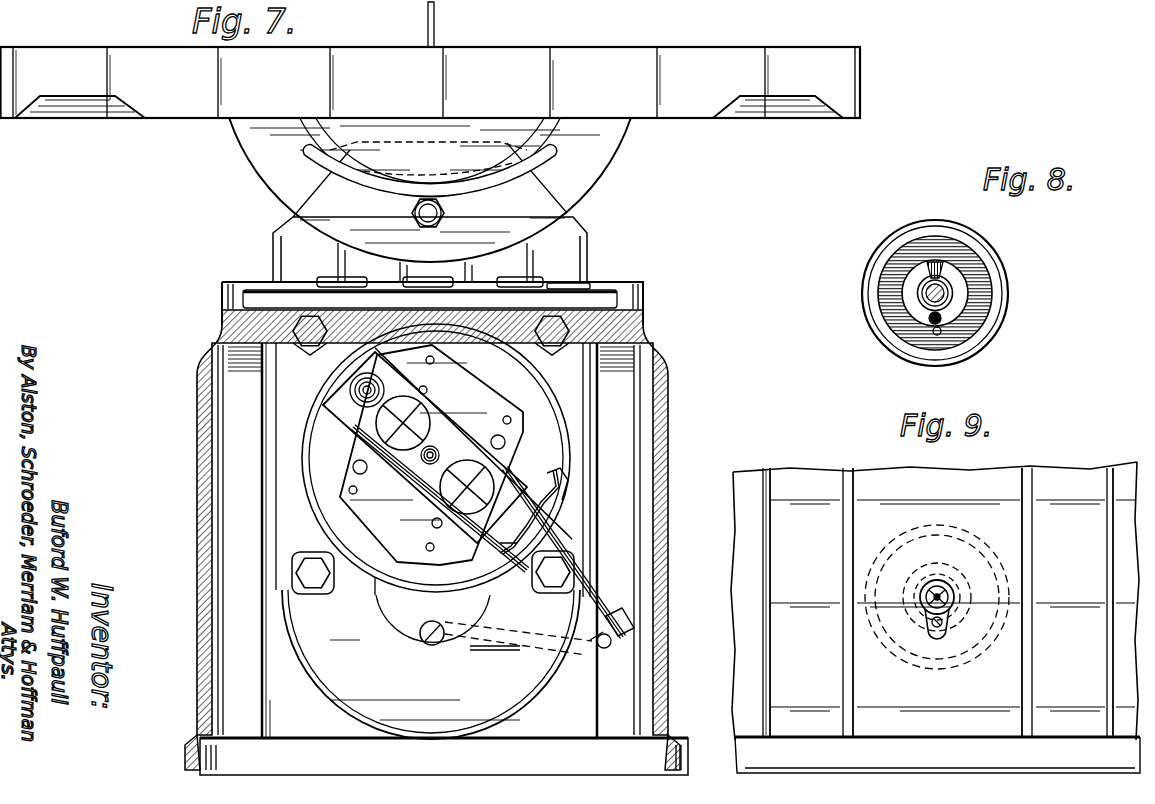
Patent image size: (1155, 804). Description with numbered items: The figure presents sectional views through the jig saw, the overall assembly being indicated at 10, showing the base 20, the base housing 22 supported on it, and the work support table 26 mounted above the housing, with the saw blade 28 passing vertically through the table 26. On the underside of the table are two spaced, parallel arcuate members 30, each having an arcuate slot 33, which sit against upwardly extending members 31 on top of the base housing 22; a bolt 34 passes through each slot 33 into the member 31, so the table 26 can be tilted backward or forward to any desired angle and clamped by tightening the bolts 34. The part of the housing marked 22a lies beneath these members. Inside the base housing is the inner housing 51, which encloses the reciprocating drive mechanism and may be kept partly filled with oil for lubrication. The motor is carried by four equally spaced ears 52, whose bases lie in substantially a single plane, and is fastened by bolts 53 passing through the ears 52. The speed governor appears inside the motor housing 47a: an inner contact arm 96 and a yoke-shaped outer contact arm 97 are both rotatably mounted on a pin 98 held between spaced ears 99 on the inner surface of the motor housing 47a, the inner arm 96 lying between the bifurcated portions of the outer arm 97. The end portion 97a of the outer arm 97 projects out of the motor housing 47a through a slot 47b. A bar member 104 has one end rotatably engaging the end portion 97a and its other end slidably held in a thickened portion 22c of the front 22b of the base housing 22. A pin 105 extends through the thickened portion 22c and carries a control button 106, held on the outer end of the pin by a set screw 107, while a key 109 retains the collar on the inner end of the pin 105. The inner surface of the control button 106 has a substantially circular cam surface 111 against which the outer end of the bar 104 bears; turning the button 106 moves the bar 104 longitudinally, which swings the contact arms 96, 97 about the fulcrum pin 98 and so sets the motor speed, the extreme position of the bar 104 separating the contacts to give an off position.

In FIG. 7, the switch mechanism assembly 10 is at (327, 349).
In FIG. 7, the base 20 is at (200, 732).
In FIG. 7, the base housing 22 is at (664, 381).
In FIG. 9, the base housing 22 is at (1131, 465).
In FIG. 7, the housing top plate 22a is at (597, 298).
In FIG. 7, the front of the base housing 22b is at (280, 662).
In FIG. 9, the front of the base housing 22b is at (805, 482).
In FIG. 9, the thickened portion 22c is at (953, 613).
In FIG. 7, the work support table 26 is at (855, 73).
In FIG. 7, the saw blade 28 is at (436, 25).
In FIG. 7, the arcuate members 30 is at (600, 148).
In FIG. 7, the upwardly extending members 31 is at (568, 248).
In FIG. 7, the arcuate slot 33 is at (557, 168).
In FIG. 7, the bolt 34 is at (417, 223).
In FIG. 7, the motor housing 47a is at (303, 477).
In FIG. 7, the slot 47b is at (545, 552).
In FIG. 7, the inner housing 51 is at (333, 685).
In FIG. 7, the ears 52 is at (327, 340).
In FIG. 7, the bolts 53 is at (303, 352).
In FIG. 7, the inner contact arm 96 is at (516, 462).
In FIG. 7, the outer contact arm 97 is at (512, 485).
In FIG. 7, the end portion 97a is at (452, 437).
In FIG. 7, the pin 98 is at (433, 547).
In FIG. 7, the ears 99 is at (431, 622).
In FIG. 8, the bar member 104 is at (947, 320).
In FIG. 9, the bar member 104 is at (932, 623).
In FIG. 8, the pin 105 is at (938, 284).
In FIG. 9, the pin 105 is at (940, 588).
In FIG. 8, the control button 106 is at (868, 316).
In FIG. 8, the set screw 107 is at (937, 322).
In FIG. 9, the key 109 is at (921, 588).
In FIG. 8, the cam surface 111 is at (957, 283).